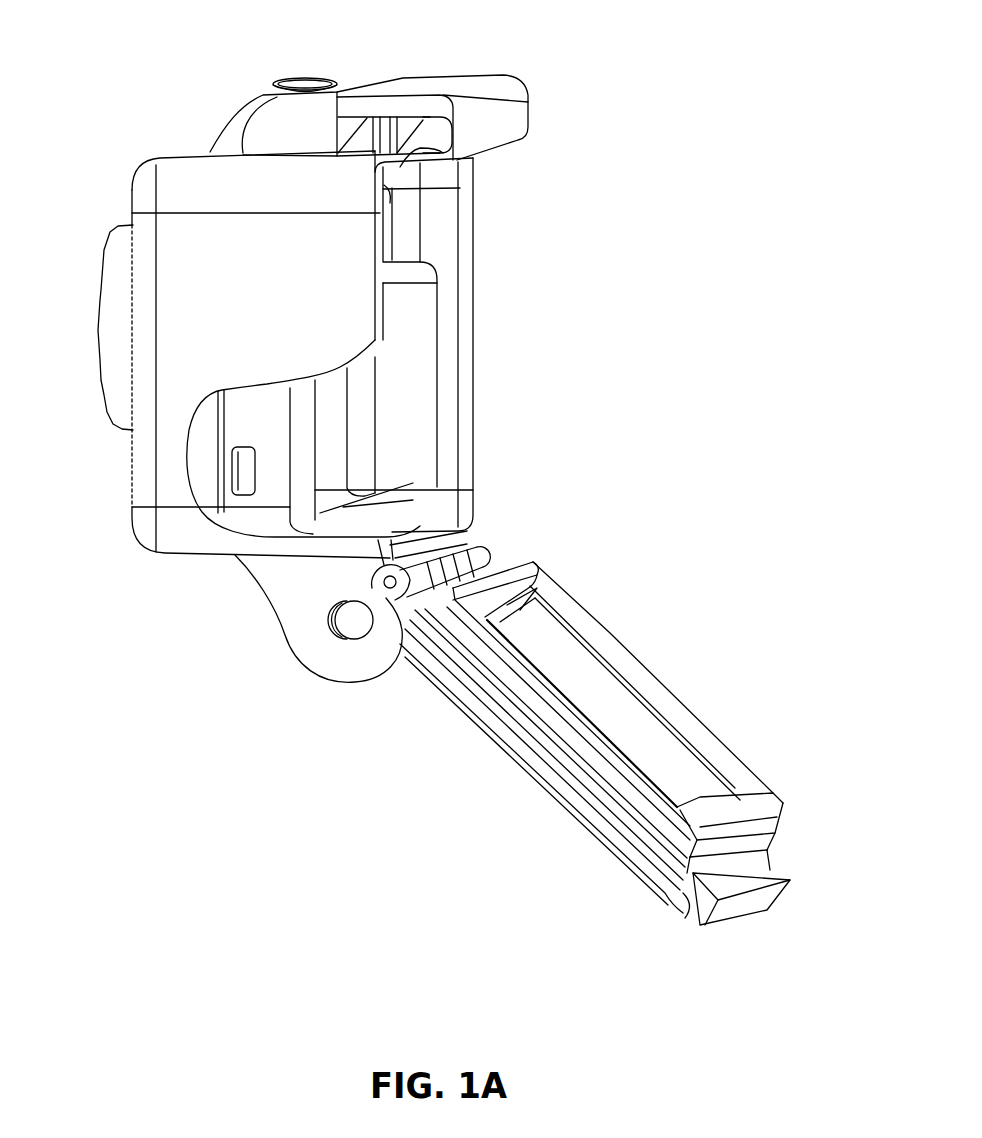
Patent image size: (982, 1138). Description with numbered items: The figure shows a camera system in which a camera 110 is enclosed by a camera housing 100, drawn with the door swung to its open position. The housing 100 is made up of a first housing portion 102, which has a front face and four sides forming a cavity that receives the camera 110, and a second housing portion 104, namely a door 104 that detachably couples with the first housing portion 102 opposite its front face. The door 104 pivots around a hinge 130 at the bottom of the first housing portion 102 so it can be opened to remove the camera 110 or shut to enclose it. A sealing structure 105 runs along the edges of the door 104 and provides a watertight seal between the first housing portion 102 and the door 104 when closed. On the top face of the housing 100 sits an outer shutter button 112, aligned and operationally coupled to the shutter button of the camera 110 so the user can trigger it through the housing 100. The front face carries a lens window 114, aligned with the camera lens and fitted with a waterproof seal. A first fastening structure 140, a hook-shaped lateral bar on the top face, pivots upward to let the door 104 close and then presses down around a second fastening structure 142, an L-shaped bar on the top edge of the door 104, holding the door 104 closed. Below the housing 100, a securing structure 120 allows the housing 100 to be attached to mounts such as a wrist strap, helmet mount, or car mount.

The housing 100 is at (628, 50).
The first housing portion 102 is at (176, 181).
The second housing portion (door) 104 is at (623, 843).
The sealing structure 105 is at (540, 738).
The camera 110 is at (270, 503).
The outer shutter button 112 is at (302, 70).
The lens window 114 is at (104, 414).
The securing structure 120 is at (315, 648).
The hinge 130 is at (479, 552).
The first fastening structure 140 is at (512, 112).
The second fastening structure 142 is at (733, 913).